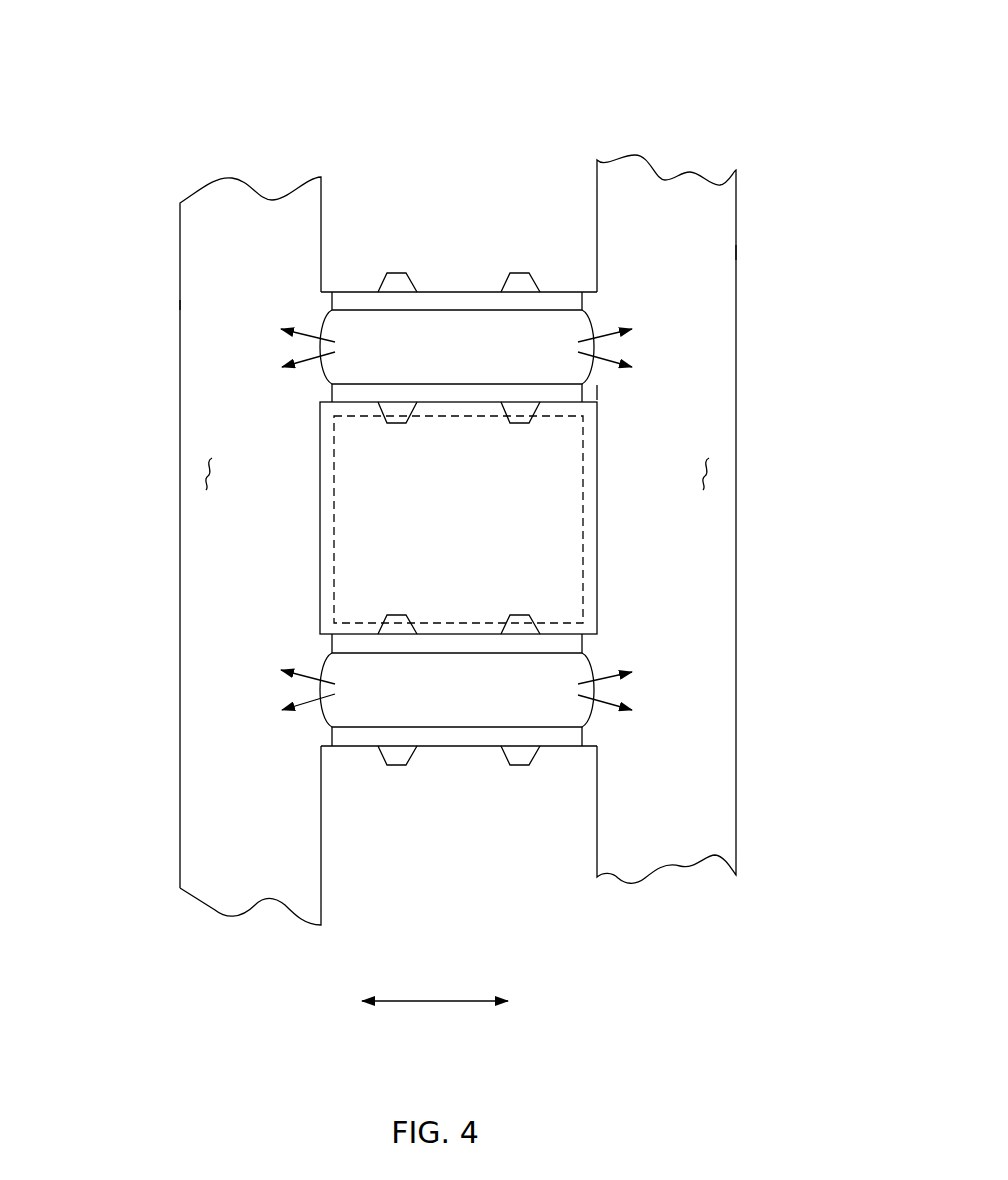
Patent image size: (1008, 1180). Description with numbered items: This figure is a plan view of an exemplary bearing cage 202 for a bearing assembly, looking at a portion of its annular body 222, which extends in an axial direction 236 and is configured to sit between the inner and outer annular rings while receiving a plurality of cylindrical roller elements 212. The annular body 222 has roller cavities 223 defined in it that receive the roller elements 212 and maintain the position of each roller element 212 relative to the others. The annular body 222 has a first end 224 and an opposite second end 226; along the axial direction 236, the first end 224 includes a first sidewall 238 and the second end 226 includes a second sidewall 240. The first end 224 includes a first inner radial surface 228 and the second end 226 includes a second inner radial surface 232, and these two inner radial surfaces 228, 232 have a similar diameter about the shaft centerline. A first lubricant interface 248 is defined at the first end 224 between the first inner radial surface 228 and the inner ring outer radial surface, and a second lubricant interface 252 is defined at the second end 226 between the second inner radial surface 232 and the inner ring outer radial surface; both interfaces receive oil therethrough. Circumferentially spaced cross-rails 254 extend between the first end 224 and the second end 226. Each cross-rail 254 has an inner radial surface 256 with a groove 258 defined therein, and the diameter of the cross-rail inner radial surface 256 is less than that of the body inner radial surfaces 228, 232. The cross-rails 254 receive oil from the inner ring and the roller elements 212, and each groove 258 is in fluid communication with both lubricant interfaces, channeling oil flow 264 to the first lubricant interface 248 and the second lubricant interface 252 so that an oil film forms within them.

The bearing cage 202 is at (732, 70).
The roller elements 212 is at (583, 525).
The annular body 222 is at (710, 392).
The roller cavities 223 is at (548, 468).
The first end 224 is at (250, 185).
The second end 226 is at (690, 170).
The first inner radial surface 228 is at (208, 475).
The second inner radial surface 232 is at (708, 475).
The axial direction 236 is at (437, 1000).
The first sidewall 238 is at (180, 303).
The second sidewall 240 is at (736, 252).
The first lubricant interface 248 is at (240, 882).
The second lubricant interface 252 is at (677, 840).
The cross-rails 254 is at (355, 292).
The cross-rail inner radial surface 256 is at (437, 395).
The groove 258 is at (568, 332).
The oil flow 264 is at (305, 332).